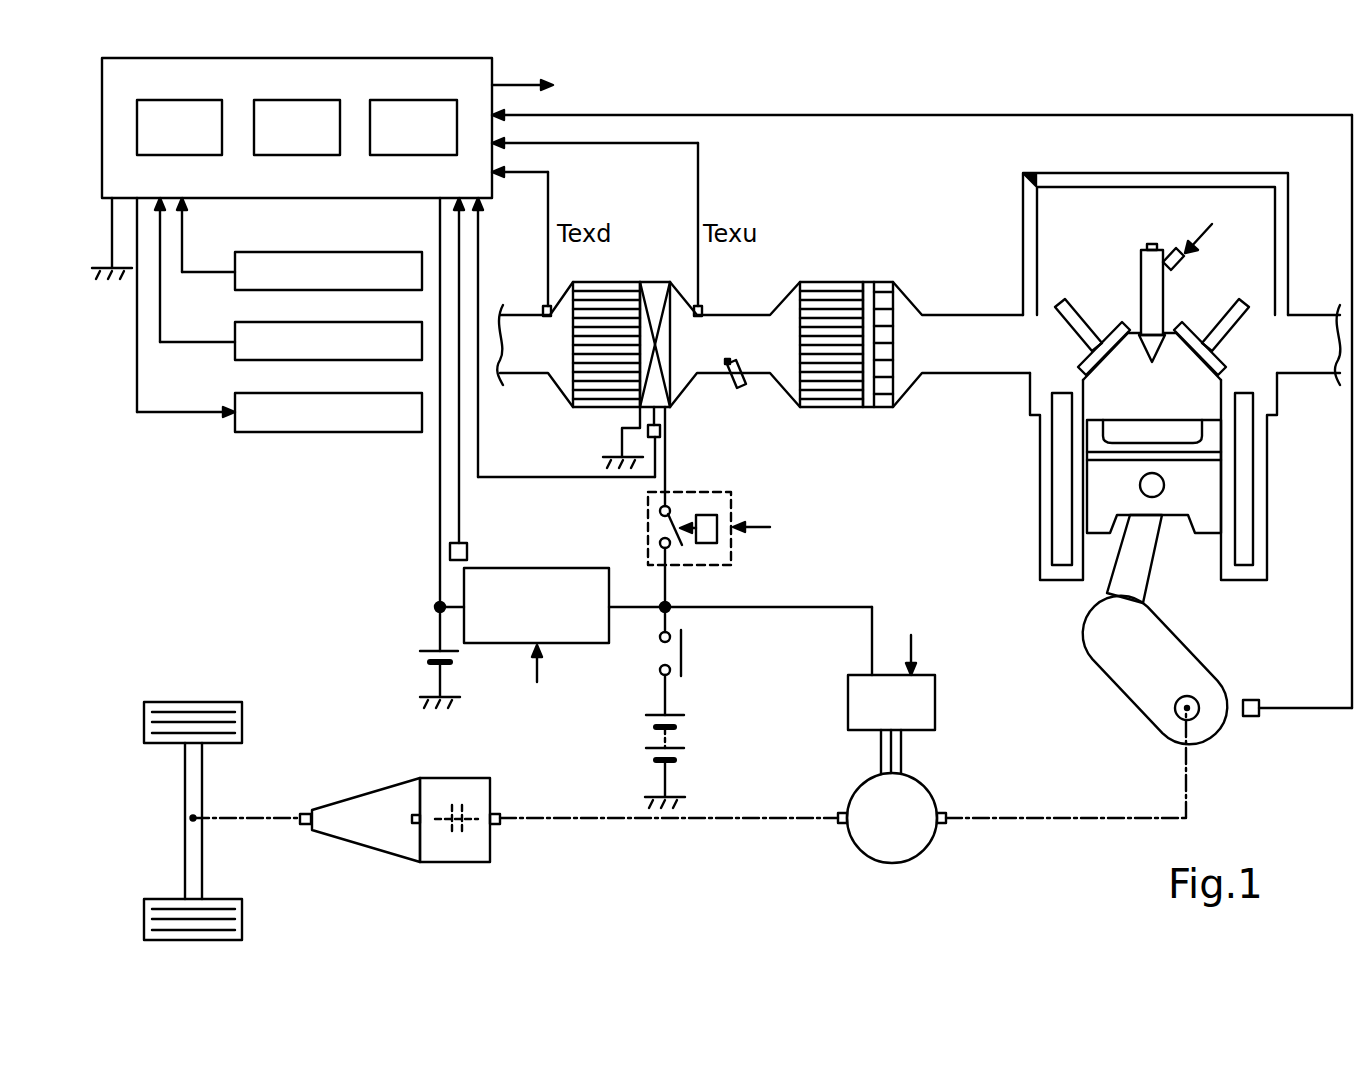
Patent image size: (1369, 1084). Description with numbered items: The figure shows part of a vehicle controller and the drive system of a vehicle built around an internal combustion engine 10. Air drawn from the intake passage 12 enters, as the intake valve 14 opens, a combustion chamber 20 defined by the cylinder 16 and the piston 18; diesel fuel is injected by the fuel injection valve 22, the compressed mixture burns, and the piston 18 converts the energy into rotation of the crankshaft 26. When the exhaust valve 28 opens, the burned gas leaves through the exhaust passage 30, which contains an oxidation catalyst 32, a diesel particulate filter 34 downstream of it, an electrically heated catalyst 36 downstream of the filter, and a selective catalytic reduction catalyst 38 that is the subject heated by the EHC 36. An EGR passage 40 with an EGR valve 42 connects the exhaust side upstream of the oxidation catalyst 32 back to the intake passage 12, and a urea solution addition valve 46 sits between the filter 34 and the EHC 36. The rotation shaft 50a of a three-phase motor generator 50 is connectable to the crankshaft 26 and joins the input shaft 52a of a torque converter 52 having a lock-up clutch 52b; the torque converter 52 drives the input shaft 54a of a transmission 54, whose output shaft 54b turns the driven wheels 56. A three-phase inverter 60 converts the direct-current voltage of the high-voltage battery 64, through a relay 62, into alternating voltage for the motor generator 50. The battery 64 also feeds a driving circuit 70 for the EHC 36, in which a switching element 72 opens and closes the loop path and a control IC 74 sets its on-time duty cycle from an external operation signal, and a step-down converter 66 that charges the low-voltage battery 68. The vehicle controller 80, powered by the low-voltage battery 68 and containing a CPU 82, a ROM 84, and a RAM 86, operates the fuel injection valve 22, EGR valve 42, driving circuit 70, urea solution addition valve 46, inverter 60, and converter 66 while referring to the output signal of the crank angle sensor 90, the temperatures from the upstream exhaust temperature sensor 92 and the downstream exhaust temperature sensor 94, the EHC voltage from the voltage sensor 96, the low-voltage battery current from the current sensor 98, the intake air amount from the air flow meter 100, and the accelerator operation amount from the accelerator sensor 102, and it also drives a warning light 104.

The internal combustion engine 10 is at (1250, 107).
The intake passage 12 is at (1310, 373).
The intake valve 14 is at (1228, 338).
The cylinder 16 is at (1253, 473).
The piston 18 is at (1212, 515).
The combustion chamber 20 is at (1210, 406).
The fuel injection valve 22 is at (1163, 287).
The crankshaft 26 is at (1198, 702).
The exhaust valve 28 is at (1075, 338).
The exhaust passage 30 is at (1010, 373).
The oxidation catalyst 32 is at (885, 407).
The diesel particulate filter 34 is at (838, 407).
The electrically heated catalyst 36 is at (670, 382).
The selective catalytic reduction catalyst 38 is at (582, 407).
The EGR passage 40 is at (1288, 270).
The EGR valve 42 is at (1023, 192).
The urea solution addition valve 46 is at (736, 390).
The motor generator 50 is at (892, 863).
The rotation shaft 50a is at (946, 826).
The torque converter 52 is at (448, 862).
The input shaft 52a is at (497, 813).
The lock-up clutch 52b is at (462, 806).
The transmission 54 is at (385, 792).
The input shaft 54a is at (410, 819).
The output shaft 54b is at (304, 813).
The driven wheels 56 is at (242, 718).
The three-phase inverter 60 is at (935, 700).
The relay 62 is at (684, 650).
The high-voltage battery 64 is at (670, 712).
The step-down converter 66 is at (590, 643).
The low-voltage battery 68 is at (430, 648).
The driving circuit 70 is at (697, 565).
The switching element 72 is at (674, 522).
The control IC 74 is at (705, 515).
The vehicle controller 80 is at (102, 82).
The CPU 82 is at (168, 100).
The ROM 84 is at (285, 100).
The RAM 86 is at (402, 100).
The crank angle sensor 90 is at (1250, 718).
The upstream exhaust temperature sensor 92 is at (702, 310).
The downstream exhaust temperature sensor 94 is at (543, 305).
The voltage sensor 96 is at (661, 436).
The current sensor 98 is at (467, 546).
The air flow meter 100 is at (352, 252).
The accelerator sensor 102 is at (352, 322).
The warning light 104 is at (352, 393).